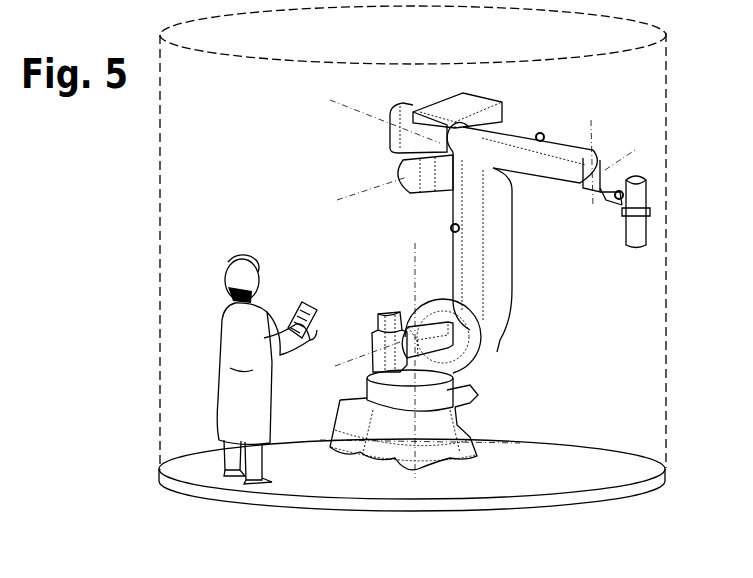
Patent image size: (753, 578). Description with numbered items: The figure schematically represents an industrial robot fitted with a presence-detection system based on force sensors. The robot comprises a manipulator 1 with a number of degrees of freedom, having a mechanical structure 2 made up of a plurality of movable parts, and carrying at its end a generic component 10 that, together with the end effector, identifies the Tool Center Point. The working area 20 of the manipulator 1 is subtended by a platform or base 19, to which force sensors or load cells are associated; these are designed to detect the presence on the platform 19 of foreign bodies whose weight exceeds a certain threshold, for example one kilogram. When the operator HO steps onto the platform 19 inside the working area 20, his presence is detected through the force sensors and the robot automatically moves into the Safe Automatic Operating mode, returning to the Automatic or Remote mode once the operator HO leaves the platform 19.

The manipulator 1 is at (513, 285).
The mechanical structure 2 is at (524, 250).
The component 10 is at (632, 247).
The platform 19 is at (163, 494).
The working area 20 is at (148, 322).
The operator HO is at (240, 350).